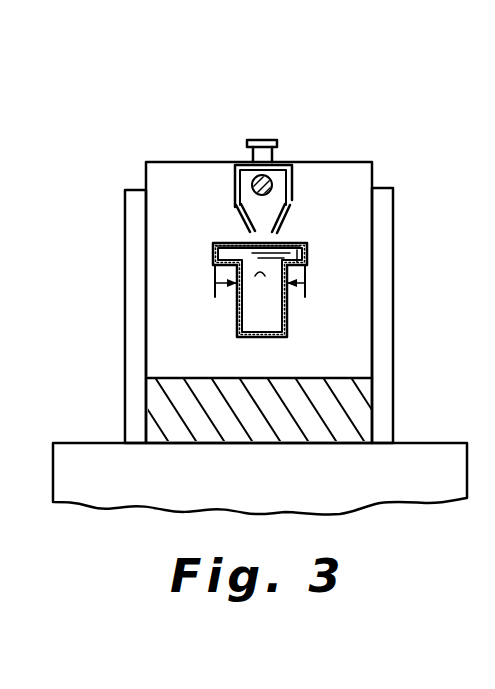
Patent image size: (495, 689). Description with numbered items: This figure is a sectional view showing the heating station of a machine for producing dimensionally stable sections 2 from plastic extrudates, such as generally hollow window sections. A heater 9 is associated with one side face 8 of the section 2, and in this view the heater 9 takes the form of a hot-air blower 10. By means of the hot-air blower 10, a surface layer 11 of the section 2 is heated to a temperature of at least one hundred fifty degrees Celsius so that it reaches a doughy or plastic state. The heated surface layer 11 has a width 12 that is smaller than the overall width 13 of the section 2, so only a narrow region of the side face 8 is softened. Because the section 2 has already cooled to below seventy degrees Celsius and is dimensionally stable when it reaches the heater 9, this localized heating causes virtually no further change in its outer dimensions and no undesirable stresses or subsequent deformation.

The heater 9 is at (241, 125).
The surface layer 11 is at (267, 243).
The hot-air blower 10 is at (282, 213).
The side face 8 is at (232, 245).
The width 12 is at (295, 250).
The overall width 13 is at (282, 296).
The section 2 is at (232, 323).